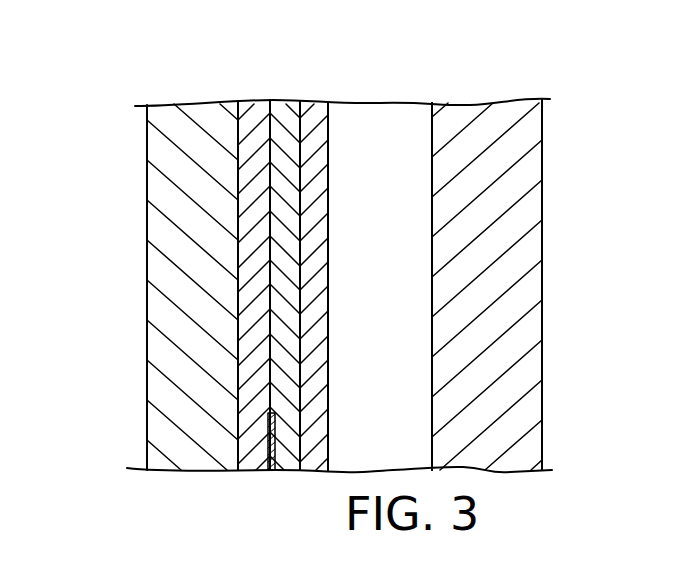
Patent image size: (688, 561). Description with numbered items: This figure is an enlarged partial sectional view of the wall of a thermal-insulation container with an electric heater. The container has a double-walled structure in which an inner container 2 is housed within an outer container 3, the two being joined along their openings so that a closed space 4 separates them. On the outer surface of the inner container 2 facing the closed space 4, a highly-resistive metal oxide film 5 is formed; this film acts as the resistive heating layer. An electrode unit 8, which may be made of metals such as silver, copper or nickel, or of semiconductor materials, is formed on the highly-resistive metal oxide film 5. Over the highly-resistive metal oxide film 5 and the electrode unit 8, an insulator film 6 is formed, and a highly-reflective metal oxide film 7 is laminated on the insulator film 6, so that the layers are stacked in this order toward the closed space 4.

The inner container 2 is at (168, 152).
The outer container 3 is at (502, 153).
The closed space 4 is at (383, 125).
The highly-resistive metal oxide film 5 is at (255, 120).
The insulator film 6 is at (288, 115).
The highly-reflective metal oxide film 7 is at (310, 118).
The electrode unit 8 is at (275, 446).